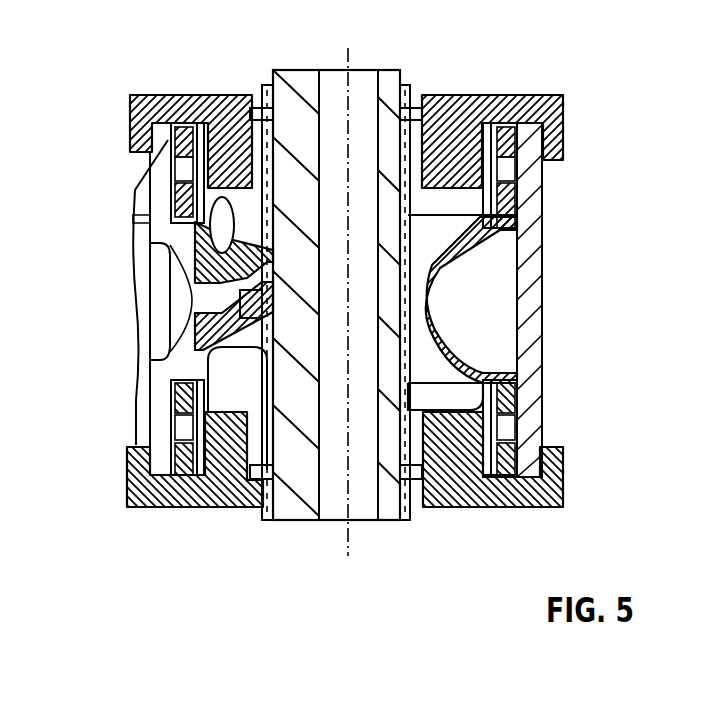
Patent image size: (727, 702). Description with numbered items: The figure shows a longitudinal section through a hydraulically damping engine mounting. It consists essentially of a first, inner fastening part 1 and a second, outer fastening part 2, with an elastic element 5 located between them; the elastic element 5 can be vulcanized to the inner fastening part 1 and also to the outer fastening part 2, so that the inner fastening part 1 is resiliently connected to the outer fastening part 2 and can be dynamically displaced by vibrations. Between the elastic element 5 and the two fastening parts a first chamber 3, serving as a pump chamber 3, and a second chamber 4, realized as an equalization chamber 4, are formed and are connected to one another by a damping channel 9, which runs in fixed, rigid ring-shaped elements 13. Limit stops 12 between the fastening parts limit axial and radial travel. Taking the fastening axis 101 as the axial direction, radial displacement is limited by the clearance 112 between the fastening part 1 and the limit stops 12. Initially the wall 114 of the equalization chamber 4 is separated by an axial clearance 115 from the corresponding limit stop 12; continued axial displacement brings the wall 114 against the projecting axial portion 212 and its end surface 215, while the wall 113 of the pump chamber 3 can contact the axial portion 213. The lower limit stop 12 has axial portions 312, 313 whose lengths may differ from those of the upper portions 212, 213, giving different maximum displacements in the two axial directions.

The fastening axis 101 is at (347, 62).
The clearance 112 is at (267, 80).
The projecting axial portion 212 is at (413, 100).
The axial portion 213 is at (253, 93).
The axial portion 312 is at (417, 460).
The axial portion 313 is at (280, 470).
The first fastening part 1 is at (222, 507).
The limit stops 12 is at (567, 102).
The ring-shaped elements 13 is at (512, 414).
The wall 113 is at (168, 200).
The damping channel 9 is at (518, 176).
The end surface 215 is at (492, 194).
The second chamber 4 is at (483, 295).
The axial clearance 115 is at (466, 194).
The wall 114 is at (450, 342).
The second fastening part 2 is at (150, 400).
The first chamber 3 is at (210, 300).
The elastic element 5 is at (168, 237).